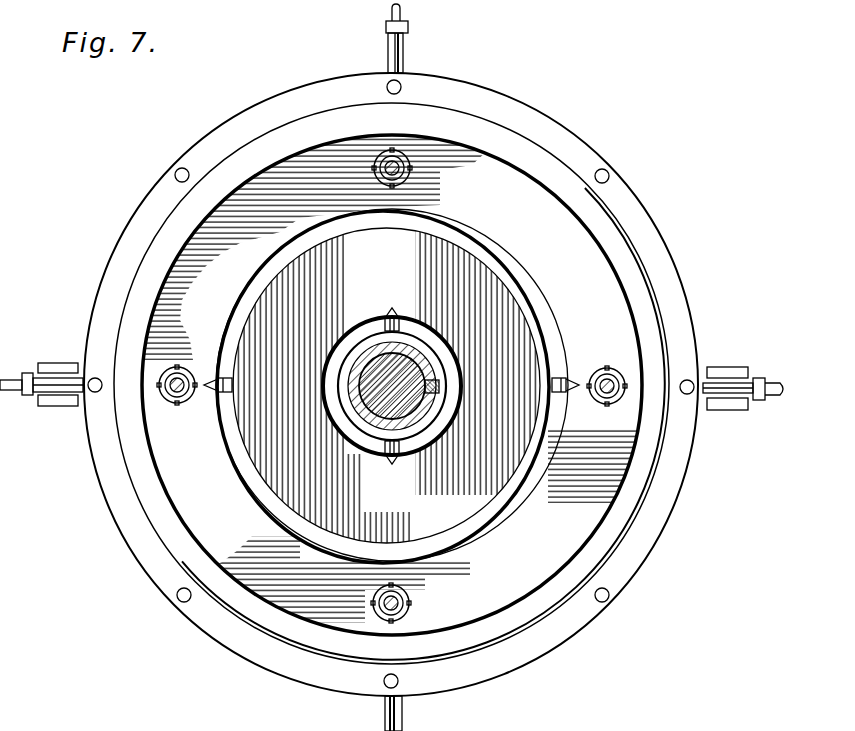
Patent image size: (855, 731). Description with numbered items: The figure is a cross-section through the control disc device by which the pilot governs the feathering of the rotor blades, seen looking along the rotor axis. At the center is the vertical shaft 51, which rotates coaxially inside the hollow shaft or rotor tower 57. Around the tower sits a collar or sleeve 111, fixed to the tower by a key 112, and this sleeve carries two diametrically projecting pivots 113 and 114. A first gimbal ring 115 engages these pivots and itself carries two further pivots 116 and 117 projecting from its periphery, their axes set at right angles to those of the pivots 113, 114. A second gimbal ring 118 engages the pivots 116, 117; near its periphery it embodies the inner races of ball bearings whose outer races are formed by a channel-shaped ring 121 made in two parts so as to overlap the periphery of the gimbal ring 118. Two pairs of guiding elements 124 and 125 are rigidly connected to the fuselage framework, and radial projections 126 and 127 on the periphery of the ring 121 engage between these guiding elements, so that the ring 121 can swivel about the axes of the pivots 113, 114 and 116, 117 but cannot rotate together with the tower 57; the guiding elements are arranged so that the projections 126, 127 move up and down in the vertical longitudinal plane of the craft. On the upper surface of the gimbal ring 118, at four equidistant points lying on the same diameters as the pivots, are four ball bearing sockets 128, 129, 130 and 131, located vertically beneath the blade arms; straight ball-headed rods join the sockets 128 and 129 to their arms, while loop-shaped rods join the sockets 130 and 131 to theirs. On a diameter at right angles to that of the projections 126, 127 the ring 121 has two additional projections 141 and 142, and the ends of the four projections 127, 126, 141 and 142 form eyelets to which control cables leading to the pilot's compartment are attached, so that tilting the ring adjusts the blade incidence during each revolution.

The vertical shaft 51 is at (368, 357).
The hollow shaft or rotor tower 57 is at (430, 368).
The collar or sleeve 111 is at (418, 345).
The key 112 is at (400, 396).
The pivot 113 is at (392, 460).
The pivot 114 is at (393, 312).
The first gimbal ring 115 is at (270, 466).
The pivot 116 is at (226, 399).
The pivot 117 is at (556, 382).
The second gimbal ring 118 is at (185, 270).
The channel-shaped ring 121 is at (118, 517).
The guiding elements 124 is at (730, 368).
The guiding elements 125 is at (62, 400).
The radial projection 126 is at (731, 393).
The radial projection 127 is at (48, 380).
The ball bearing socket 128 is at (411, 176).
The ball bearing socket 129 is at (411, 598).
The ball bearing socket 130 is at (180, 400).
The ball bearing socket 131 is at (600, 403).
The projection 141 is at (403, 40).
The projection 142 is at (403, 708).